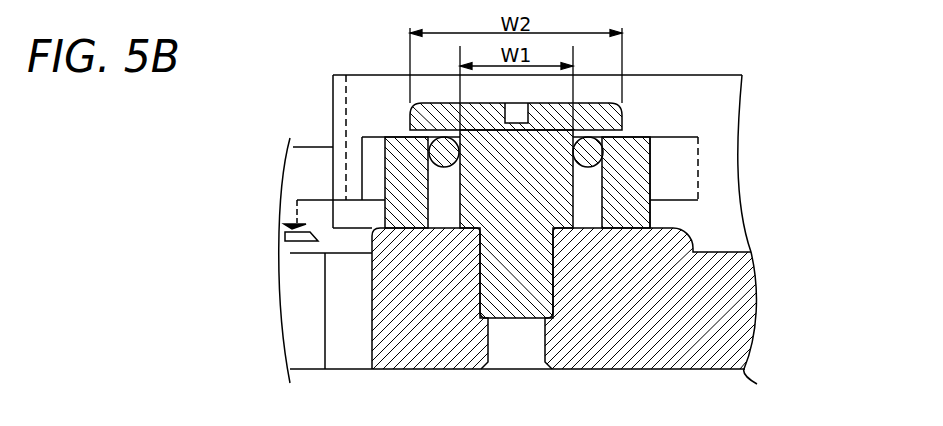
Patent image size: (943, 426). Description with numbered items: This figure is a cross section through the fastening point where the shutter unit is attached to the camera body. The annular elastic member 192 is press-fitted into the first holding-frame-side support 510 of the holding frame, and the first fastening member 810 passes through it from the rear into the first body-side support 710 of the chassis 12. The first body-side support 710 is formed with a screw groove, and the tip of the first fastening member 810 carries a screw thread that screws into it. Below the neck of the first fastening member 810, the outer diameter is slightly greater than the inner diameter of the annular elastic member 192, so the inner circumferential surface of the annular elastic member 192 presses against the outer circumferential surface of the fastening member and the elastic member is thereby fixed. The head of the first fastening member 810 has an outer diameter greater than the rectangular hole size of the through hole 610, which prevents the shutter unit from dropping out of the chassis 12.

The chassis 12 is at (718, 272).
The annular elastic member 192 is at (412, 130).
The first holding-frame-side support 510 is at (393, 173).
The through hole 610 is at (587, 205).
The first body-side support 710 is at (458, 240).
The first fastening member 810 is at (592, 113).